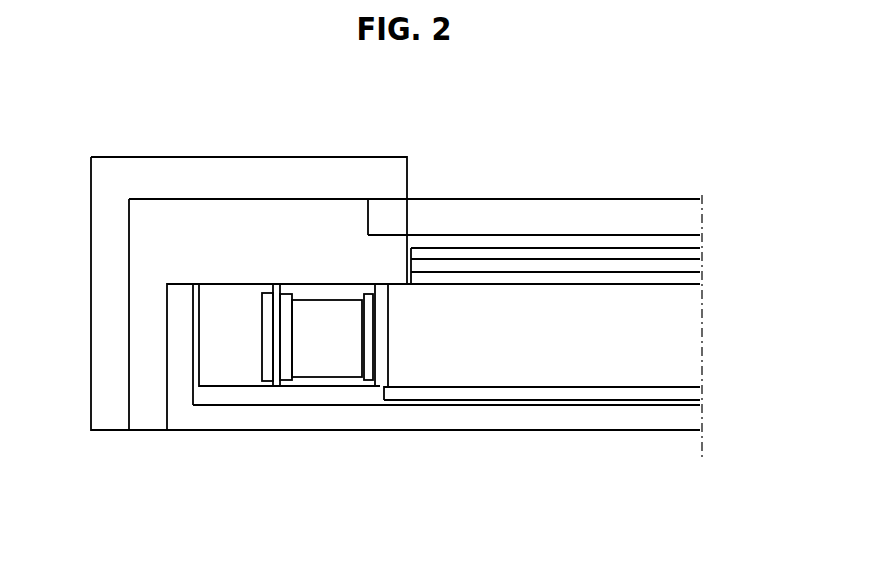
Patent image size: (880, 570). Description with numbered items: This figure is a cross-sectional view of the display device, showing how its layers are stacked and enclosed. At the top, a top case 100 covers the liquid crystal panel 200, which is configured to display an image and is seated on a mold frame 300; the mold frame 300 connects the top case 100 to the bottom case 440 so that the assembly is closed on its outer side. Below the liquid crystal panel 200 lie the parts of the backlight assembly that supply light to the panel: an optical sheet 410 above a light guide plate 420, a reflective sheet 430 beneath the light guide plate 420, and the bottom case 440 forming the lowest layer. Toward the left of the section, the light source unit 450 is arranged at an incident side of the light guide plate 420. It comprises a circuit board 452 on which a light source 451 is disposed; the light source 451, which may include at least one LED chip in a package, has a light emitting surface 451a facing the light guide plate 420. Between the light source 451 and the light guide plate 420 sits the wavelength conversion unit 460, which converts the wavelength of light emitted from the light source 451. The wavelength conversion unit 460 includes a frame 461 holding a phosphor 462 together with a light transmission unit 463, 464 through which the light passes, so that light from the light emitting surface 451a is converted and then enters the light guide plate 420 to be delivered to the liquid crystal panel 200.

The top case 100 is at (277, 172).
The liquid crystal panel 200 is at (574, 215).
The mold frame 300 is at (143, 233).
The optical sheet 410 is at (707, 250).
The light guide plate 420 is at (692, 328).
The reflective sheet 430 is at (692, 393).
The bottom case 440 is at (692, 418).
The light source unit 450 is at (241, 413).
The light source 451 is at (223, 373).
The light emitting surface 451a is at (235, 392).
The circuit board 452 is at (203, 398).
The wavelength conversion unit 460 is at (366, 413).
The frame 461 is at (348, 382).
The phosphor 462 is at (322, 363).
The light transmission unit 463 is at (370, 360).
The light transmission unit 464 is at (285, 373).